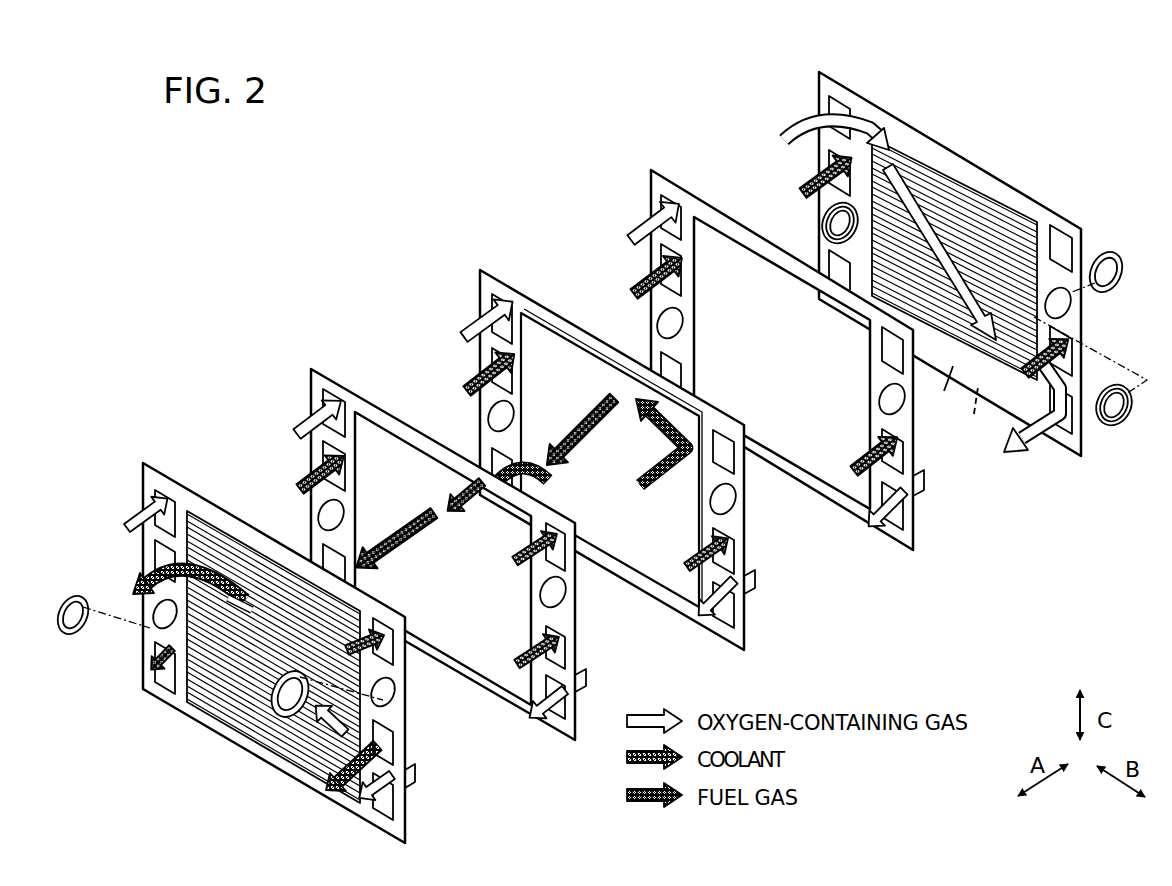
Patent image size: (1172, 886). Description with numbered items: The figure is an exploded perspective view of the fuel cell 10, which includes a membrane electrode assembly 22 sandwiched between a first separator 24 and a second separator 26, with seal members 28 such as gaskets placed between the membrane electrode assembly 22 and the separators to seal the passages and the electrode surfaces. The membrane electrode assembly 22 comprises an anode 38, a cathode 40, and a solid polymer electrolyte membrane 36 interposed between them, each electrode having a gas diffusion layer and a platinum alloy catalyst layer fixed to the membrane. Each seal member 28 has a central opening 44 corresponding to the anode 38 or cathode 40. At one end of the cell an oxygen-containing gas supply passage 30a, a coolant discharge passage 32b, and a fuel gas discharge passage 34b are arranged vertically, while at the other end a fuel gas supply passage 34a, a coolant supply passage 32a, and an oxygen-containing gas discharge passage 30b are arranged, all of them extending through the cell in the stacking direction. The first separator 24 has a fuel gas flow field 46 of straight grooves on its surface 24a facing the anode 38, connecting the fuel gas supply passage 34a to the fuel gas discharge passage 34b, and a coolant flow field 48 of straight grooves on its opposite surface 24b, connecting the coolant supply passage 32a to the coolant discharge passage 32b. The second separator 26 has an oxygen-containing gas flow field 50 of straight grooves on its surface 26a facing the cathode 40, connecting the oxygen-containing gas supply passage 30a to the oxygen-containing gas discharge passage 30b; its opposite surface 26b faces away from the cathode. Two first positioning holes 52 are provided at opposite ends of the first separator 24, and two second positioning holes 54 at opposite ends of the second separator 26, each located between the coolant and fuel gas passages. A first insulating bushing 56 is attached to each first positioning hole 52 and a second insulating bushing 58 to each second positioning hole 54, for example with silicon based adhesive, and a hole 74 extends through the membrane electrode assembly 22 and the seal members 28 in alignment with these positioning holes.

The fuel cell 10 is at (205, 204).
The membrane electrode assembly 22 is at (479, 267).
The first separator 24 is at (143, 461).
The surface of first separator 24a is at (298, 777).
The surface of first separator 24b is at (340, 798).
The second separator 26 is at (818, 70).
The surface of second separator 26a is at (948, 393).
The surface of second separator 26b is at (974, 415).
The seal member 28 is at (650, 168).
The oxygen-containing gas supply passage 30a is at (165, 523).
The oxygen-containing gas discharge passage 30b is at (405, 820).
The coolant supply passage 32a is at (400, 766).
The coolant discharge passage 32b is at (150, 558).
The fuel gas supply passage 34a is at (387, 633).
The fuel gas discharge passage 34b is at (150, 660).
The solid polymer electrolyte membrane 36 is at (700, 622).
The anode 38 is at (594, 375).
The cathode 40 is at (549, 360).
The opening 44 is at (836, 478).
The fuel gas flow field 46 is at (223, 522).
The coolant flow field 48 is at (263, 567).
The oxygen-containing gas flow field 50 is at (973, 200).
The first positioning hole 52 is at (158, 610).
The second positioning hole 54 is at (1070, 309).
The first insulating bushing 56 is at (62, 596).
The second insulating bushing 58 is at (820, 219).
The hole 74 is at (350, 534).